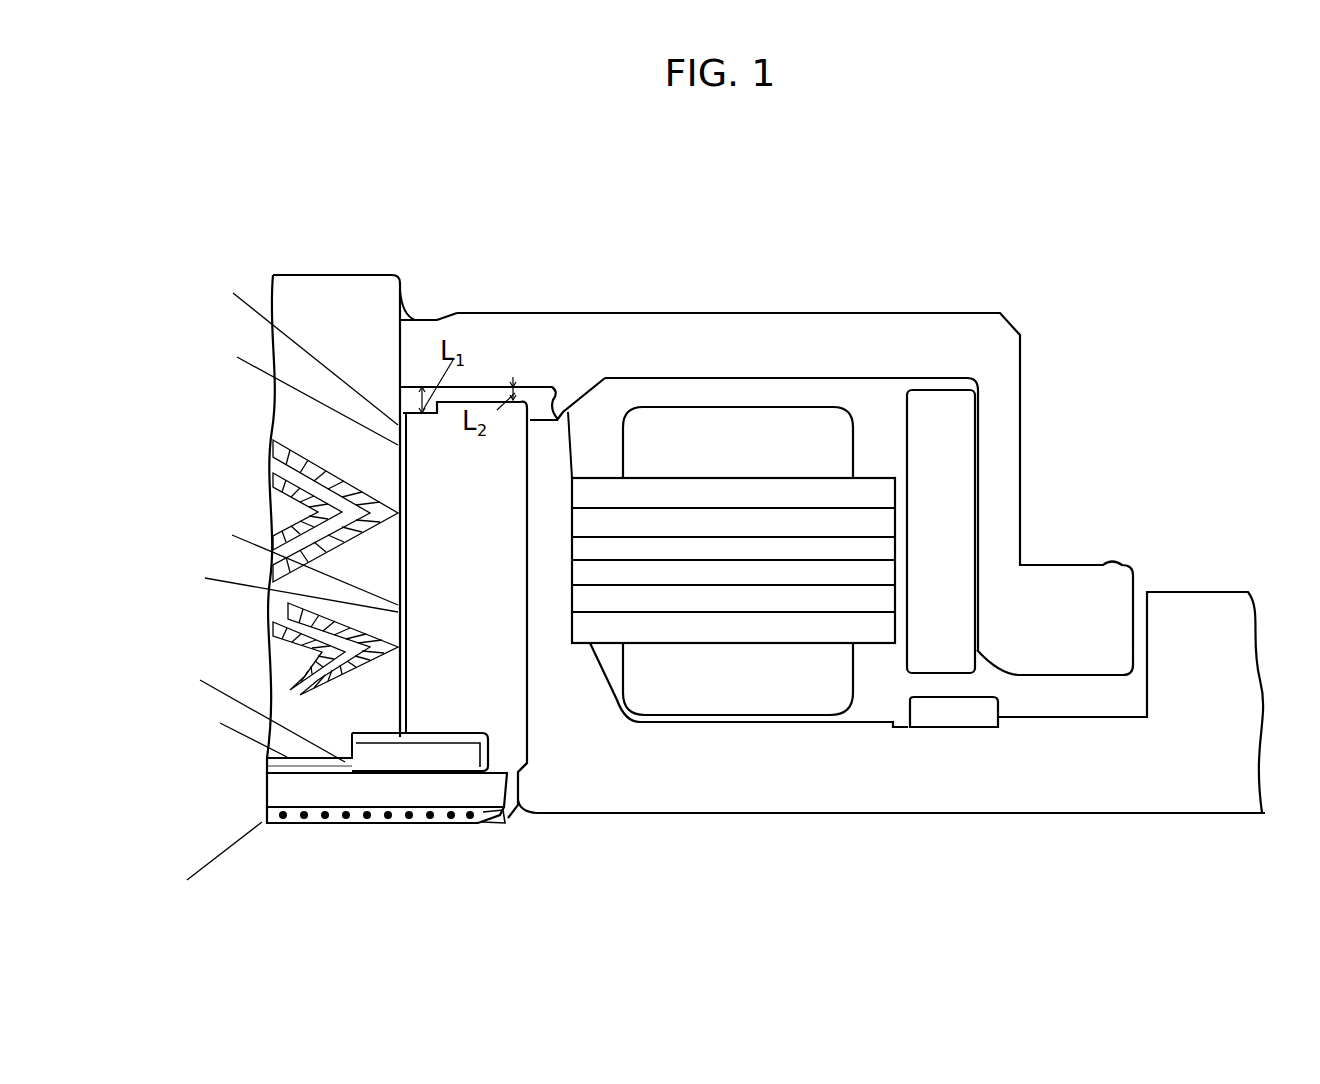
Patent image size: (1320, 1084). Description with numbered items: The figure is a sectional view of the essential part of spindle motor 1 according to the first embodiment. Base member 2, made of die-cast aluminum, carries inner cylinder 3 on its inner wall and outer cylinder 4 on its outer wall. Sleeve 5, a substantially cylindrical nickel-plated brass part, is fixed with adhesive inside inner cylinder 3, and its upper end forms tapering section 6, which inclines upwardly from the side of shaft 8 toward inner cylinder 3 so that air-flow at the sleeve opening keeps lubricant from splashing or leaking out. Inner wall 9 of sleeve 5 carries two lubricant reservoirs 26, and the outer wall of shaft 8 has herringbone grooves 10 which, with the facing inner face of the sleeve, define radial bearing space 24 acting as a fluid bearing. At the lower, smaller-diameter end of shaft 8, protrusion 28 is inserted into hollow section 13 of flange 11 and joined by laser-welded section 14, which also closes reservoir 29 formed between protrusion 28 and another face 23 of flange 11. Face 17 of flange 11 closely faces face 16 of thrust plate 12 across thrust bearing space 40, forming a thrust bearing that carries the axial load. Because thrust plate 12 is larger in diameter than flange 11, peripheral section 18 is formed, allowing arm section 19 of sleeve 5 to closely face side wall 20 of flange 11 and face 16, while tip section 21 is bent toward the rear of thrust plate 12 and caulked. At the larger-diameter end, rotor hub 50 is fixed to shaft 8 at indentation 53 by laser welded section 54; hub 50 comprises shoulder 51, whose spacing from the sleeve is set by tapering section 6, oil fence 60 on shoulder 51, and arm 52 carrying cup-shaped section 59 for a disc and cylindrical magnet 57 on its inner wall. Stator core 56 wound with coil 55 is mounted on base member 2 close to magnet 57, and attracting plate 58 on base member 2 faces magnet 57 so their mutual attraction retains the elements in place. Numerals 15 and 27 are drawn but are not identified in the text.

The spindle motor 1 is at (735, 186).
The base member 2 is at (833, 785).
The inner cylinder 3 is at (550, 565).
The outer cylinder 4 is at (1197, 643).
The sleeve 5 is at (495, 660).
The tapering section 6 is at (468, 400).
The shaft 8 is at (332, 275).
The inner wall of sleeve 9 is at (303, 389).
The herringbone grooves 10 is at (280, 490).
The flange 11 is at (408, 760).
The thrust plate 12 is at (302, 788).
The hollow section 13 is at (283, 769).
The laser-welded section 14 is at (253, 711).
The magnet gap 15 is at (290, 635).
The face of thrust plate 16 is at (273, 777).
The face of flange 17 is at (445, 767).
The peripheral section 18 is at (483, 768).
The arm section 19 is at (515, 747).
The side wall of flange 20 is at (278, 648).
The tip section 21 is at (520, 817).
The another face of flange 23 is at (377, 743).
The radial bearing space 24 is at (278, 525).
The lubricant reservoirs 26 is at (273, 582).
The ball bearing 27 is at (295, 822).
The protrusion 28 is at (305, 725).
The reservoir 29 is at (388, 740).
The thrust bearing space 40 is at (428, 770).
The rotor hub 50 is at (967, 303).
The shoulder 51 is at (690, 330).
The arm 52 is at (1005, 428).
The indentation 53 is at (437, 317).
The laser welded section 54 is at (408, 305).
The coil 55 is at (753, 420).
The stator core 56 is at (860, 487).
The cylindrical magnet 57 is at (952, 545).
The attracting plate 58 is at (953, 718).
The cup-shaped section 59 is at (1123, 565).
The oil fence 60 is at (566, 392).